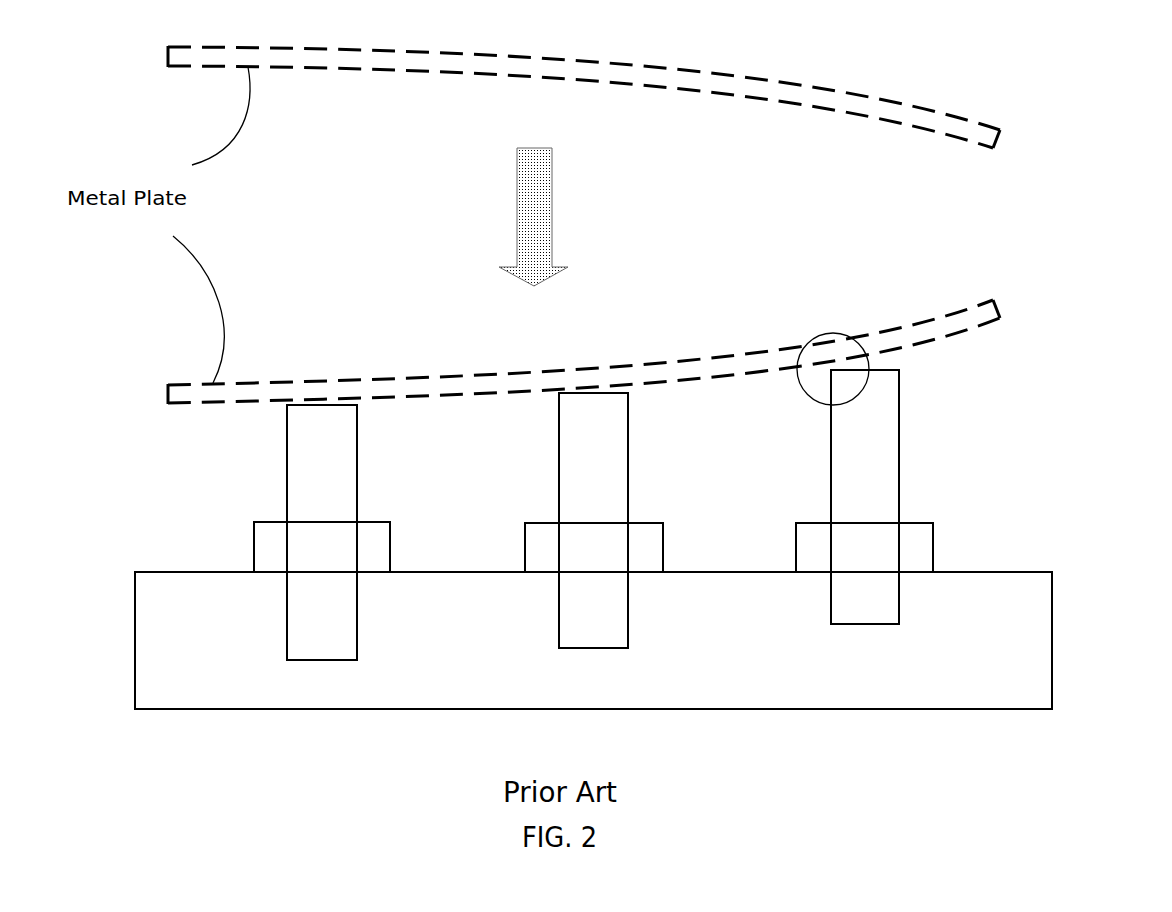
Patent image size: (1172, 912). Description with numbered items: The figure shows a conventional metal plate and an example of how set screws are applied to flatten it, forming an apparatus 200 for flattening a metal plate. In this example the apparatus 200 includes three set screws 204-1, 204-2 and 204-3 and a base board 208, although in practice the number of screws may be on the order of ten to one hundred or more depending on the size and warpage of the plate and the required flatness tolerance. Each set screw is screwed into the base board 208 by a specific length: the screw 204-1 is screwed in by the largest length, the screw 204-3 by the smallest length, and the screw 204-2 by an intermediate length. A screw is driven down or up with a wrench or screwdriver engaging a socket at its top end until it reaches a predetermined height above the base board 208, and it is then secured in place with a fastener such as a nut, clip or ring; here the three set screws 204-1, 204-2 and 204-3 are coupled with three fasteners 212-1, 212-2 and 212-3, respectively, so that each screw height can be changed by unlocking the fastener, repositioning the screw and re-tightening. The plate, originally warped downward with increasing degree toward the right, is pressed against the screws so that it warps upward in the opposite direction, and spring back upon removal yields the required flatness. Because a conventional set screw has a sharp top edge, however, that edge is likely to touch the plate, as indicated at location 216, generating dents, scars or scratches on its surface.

The apparatus for flattening a metal plate 200 is at (992, 455).
The set screw 204-1 is at (287, 465).
The set screw 204-2 is at (558, 473).
The set screw 204-3 is at (831, 477).
The base board 208 is at (1025, 617).
The fastener 212-1 is at (254, 548).
The fastener 212-2 is at (525, 542).
The fastener 212-3 is at (796, 542).
The location 216 is at (833, 333).